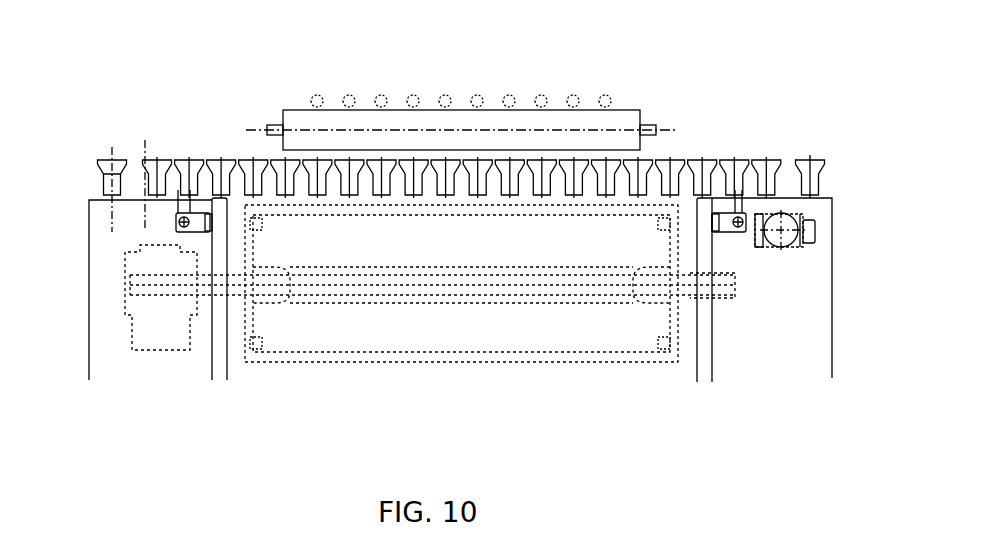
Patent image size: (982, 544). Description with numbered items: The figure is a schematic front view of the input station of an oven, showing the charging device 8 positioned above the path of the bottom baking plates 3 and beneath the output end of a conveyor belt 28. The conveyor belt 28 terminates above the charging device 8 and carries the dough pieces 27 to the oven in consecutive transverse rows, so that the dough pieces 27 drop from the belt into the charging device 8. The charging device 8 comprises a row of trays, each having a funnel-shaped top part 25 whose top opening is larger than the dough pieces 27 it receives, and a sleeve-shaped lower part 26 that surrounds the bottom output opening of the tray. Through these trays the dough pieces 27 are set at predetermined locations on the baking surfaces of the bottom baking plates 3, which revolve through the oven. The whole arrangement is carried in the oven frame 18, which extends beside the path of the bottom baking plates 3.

The bottom baking plates 3 is at (450, 212).
The charging device 8 is at (702, 147).
The oven frame 18 is at (824, 322).
The funnel-shaped top part 25 is at (102, 170).
The sleeve-shaped lower part 26 is at (103, 189).
The dough pieces 27 is at (347, 95).
The conveyor belt 28 is at (631, 110).